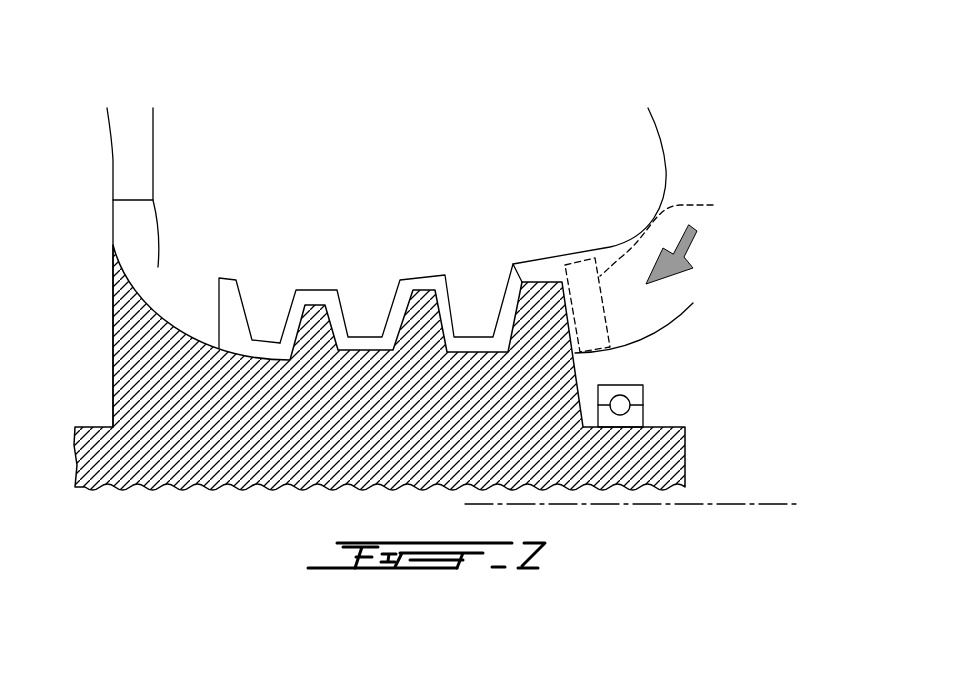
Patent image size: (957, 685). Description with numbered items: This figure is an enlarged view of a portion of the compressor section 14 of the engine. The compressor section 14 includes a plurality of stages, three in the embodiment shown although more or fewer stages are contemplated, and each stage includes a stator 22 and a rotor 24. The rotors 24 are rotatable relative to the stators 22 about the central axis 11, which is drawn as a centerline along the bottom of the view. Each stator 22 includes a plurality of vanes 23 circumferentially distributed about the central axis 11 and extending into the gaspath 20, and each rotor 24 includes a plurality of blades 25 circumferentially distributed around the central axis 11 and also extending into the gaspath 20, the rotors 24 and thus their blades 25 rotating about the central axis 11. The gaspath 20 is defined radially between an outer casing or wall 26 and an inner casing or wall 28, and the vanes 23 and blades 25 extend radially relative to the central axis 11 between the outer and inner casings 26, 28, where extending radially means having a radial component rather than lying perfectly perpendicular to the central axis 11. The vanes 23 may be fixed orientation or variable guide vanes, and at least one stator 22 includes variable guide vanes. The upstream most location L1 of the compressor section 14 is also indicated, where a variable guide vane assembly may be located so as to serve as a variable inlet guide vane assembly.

The compressor section 14 is at (348, 132).
The gaspath 20 is at (237, 279).
The stator 22 is at (365, 298).
The vanes 23 is at (264, 305).
The rotor 24 is at (527, 310).
The blades 25 is at (538, 308).
The outer casing 26 is at (610, 247).
The inner casing 28 is at (660, 330).
The central axis 11 is at (727, 503).
The upstream most location L1 is at (669, 238).